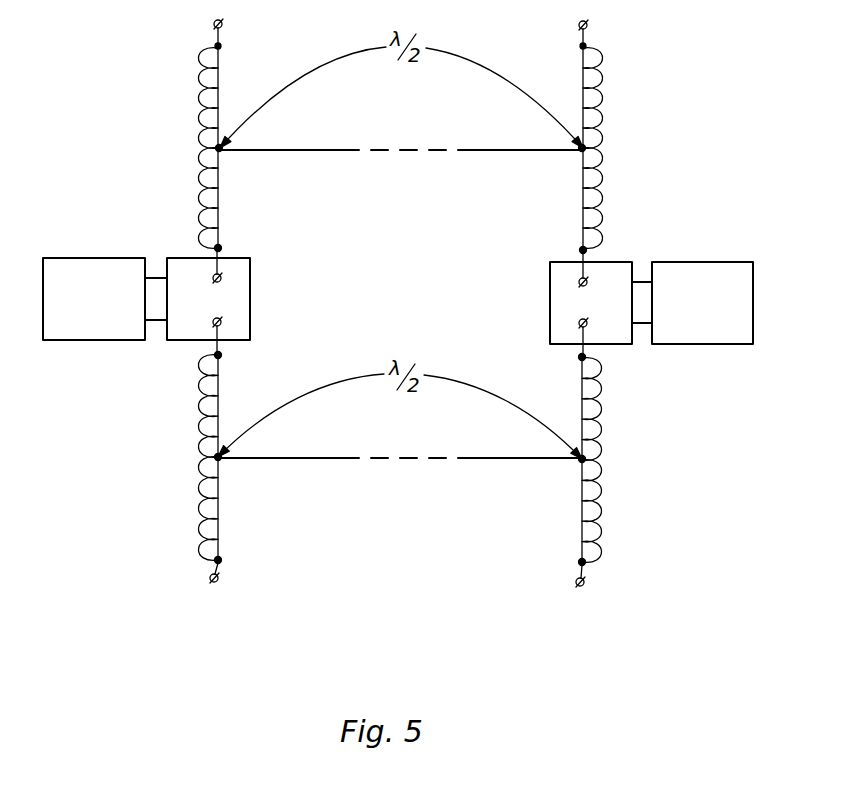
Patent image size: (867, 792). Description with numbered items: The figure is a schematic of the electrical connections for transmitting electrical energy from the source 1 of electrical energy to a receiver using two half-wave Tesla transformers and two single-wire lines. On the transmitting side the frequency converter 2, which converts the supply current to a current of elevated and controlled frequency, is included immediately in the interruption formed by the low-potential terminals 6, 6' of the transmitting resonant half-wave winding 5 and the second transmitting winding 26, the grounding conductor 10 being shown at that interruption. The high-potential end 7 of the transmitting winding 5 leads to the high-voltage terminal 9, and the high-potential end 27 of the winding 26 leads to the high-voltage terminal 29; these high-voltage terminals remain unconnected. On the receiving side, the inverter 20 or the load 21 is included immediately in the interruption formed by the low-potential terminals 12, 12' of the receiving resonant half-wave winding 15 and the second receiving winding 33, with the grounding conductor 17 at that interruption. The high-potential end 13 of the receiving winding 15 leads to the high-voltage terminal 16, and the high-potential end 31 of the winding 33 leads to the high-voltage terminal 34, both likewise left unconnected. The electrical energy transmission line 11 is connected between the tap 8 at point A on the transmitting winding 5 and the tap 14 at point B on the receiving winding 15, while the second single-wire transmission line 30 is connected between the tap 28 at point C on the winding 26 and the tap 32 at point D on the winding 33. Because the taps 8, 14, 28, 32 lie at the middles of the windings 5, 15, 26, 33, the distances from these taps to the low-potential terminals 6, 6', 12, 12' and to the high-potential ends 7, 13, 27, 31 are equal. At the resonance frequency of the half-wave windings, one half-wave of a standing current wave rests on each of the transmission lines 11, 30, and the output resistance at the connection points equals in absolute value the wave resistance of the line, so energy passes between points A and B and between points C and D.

The source of electrical energy 1 is at (122, 258).
The frequency converter 2 is at (180, 258).
The transmitting resonant Tesla transformer 5 is at (208, 205).
The low-potential terminal 6 is at (239, 239).
The low-potential terminal 6' is at (243, 366).
The high-potential terminal 7 is at (223, 47).
The tap 8 is at (222, 147).
The high-voltage terminal 9 is at (223, 24).
The grounding conductor 10 is at (222, 268).
The electrical energy transmission line 11 is at (296, 149).
The low-potential terminal 12 is at (557, 232).
The low-potential terminal 12' is at (557, 363).
The high-potential terminal 13 is at (583, 46).
The tap 14 is at (581, 147).
The receiving resonant Tesla transformer 15 is at (595, 179).
The high-voltage terminal 16 is at (580, 25).
The grounding conductor 17 is at (583, 268).
The inverter 20 is at (620, 262).
The load 21 is at (700, 262).
The winding 26 is at (208, 415).
The high-potential end 27 is at (222, 560).
The tap 28 is at (224, 455).
The high-voltage terminal 29 is at (219, 578).
The single-wire transmission line 30 is at (280, 460).
The high-potential end 31 is at (580, 562).
The tap 32 is at (578, 458).
The winding 33 is at (590, 410).
The high-voltage terminal 34 is at (576, 582).